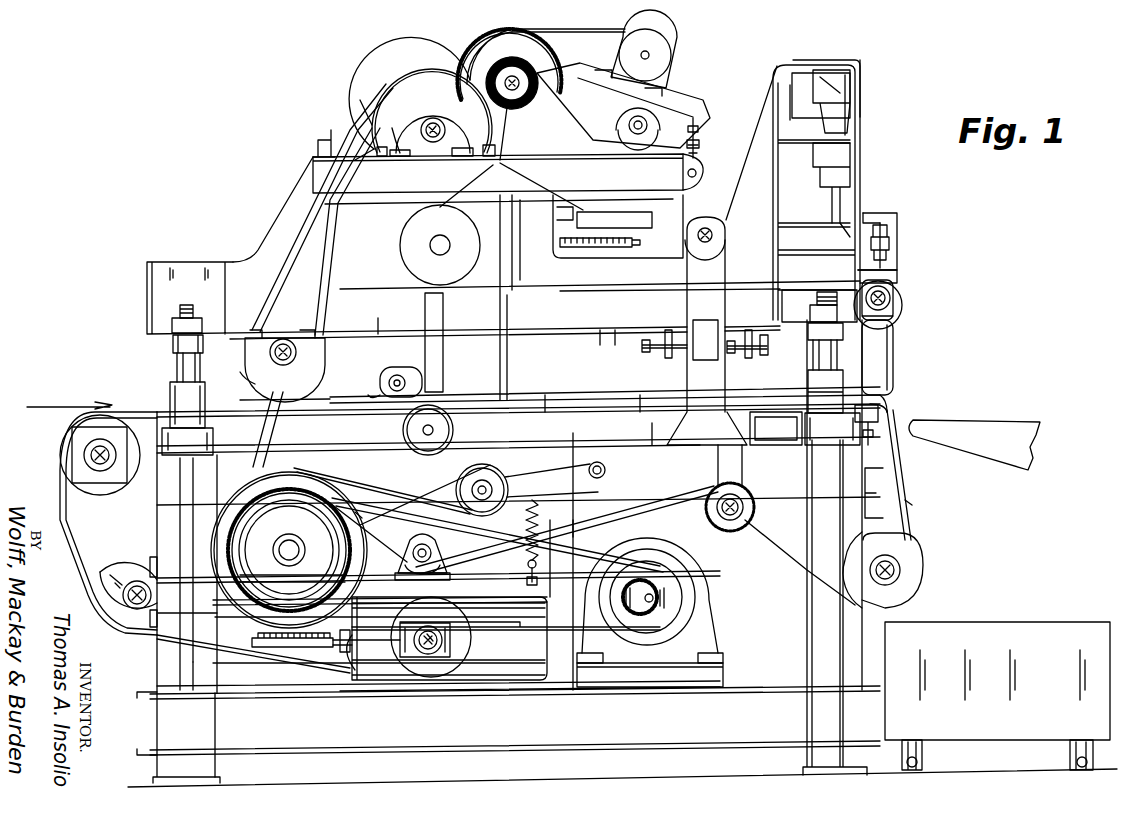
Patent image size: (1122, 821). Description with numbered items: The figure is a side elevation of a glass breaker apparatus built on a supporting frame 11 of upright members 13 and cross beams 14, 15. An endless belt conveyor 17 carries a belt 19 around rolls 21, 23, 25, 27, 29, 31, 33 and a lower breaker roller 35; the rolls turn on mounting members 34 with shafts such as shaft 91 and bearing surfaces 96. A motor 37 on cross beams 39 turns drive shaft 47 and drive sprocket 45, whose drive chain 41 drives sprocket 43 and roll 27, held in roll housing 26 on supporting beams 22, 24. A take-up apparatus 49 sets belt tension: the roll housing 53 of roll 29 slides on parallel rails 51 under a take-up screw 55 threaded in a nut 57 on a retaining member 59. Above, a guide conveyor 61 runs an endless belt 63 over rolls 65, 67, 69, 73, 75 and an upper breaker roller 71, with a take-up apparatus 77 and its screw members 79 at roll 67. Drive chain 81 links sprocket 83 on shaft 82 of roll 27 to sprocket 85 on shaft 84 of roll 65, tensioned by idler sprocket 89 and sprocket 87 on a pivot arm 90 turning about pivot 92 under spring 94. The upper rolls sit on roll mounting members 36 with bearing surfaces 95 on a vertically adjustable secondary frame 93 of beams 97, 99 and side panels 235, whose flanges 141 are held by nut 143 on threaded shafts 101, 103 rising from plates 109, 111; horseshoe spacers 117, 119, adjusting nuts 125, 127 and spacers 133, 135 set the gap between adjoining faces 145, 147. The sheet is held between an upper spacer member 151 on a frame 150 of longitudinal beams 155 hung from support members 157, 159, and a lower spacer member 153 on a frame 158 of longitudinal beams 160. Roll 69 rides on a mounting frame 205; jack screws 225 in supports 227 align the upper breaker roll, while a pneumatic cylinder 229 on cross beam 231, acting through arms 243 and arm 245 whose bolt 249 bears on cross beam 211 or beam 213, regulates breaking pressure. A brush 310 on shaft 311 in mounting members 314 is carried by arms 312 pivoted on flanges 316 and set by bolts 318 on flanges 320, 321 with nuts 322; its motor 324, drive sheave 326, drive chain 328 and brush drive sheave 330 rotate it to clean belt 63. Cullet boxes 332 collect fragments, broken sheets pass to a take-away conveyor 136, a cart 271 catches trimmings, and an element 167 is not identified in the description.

The supporting frame 11 is at (156, 668).
The upright members 13 is at (200, 665).
The cross beams 14 is at (155, 722).
The cross beams 15 is at (330, 745).
The endless belt conveyor 17 is at (910, 508).
The belt 19 is at (73, 518).
The roll 21 is at (910, 556).
The supporting beam 22 is at (218, 605).
The roll 23 is at (745, 520).
The supporting beam 24 is at (575, 538).
The roll 25 is at (430, 538).
The roll housing 26 is at (275, 552).
The roll 27 is at (335, 552).
The roll 29 is at (458, 660).
The roll 31 is at (128, 562).
The roll 33 is at (66, 454).
The mounting members 34 is at (104, 470).
The breaker roller 35 is at (880, 412).
The roll mounting members 36 is at (392, 132).
The motor 37 is at (688, 550).
The cross beams 39 is at (547, 678).
The drive chain 41 is at (448, 516).
The sprocket 43 is at (362, 515).
The drive sprocket 45 is at (650, 604).
The drive shaft 47 is at (643, 593).
The take-up apparatus 49 is at (428, 660).
The parallel rails 51 is at (517, 626).
The roll housing 53 is at (455, 640).
The take-up screw 55 is at (300, 650).
The nut 57 is at (338, 655).
The retaining member 59 is at (345, 690).
The guide conveyor 61 is at (918, 335).
The endless belt 63 is at (365, 388).
The roll 65 is at (418, 82).
The roll 67 is at (462, 265).
The roll 69 is at (895, 297).
The breaker roller 71 is at (893, 383).
The roll 73 is at (391, 379).
The roll 75 is at (312, 370).
The take-up apparatus 77 is at (372, 283).
The screw members 79 is at (600, 250).
The drive chain 81 is at (380, 98).
The shaft 82 is at (287, 542).
The sprocket 83 is at (325, 476).
The shaft 84 is at (428, 115).
The sprocket 85 is at (390, 183).
The sprocket 87 is at (460, 478).
The idler sprocket 89 is at (416, 452).
The pivot arm 90 is at (585, 490).
The shaft 91 is at (125, 580).
The pivot 92 is at (606, 470).
The secondary frame 93 is at (278, 222).
The spring 94 is at (518, 542).
The bearing surfaces 95 is at (436, 120).
The bearing surfaces 96 is at (110, 585).
The beam 97 is at (255, 310).
The beam 99 is at (317, 136).
The threaded shaft 101 is at (190, 305).
The threaded shaft 103 is at (817, 299).
The plate 109 is at (176, 455).
The plate 111 is at (818, 440).
The horseshoe spacer 117 is at (170, 390).
The horseshoe spacer 119 is at (808, 378).
The adjusting nut 125 is at (177, 368).
The adjusting nut 127 is at (813, 355).
The spacer 133 is at (172, 345).
The spacer 135 is at (808, 333).
The take-away conveyor 136 is at (1003, 410).
The flanges 141 is at (378, 317).
The nut 143 is at (172, 322).
The upper adjoining face 145 is at (635, 412).
The lower adjoining face 147 is at (345, 412).
The frame 150 is at (590, 350).
The upper spacer member 151 is at (480, 395).
The lower spacer member 153 is at (553, 412).
The longitudinal beams 155 is at (605, 345).
The support member 157 is at (425, 340).
The frame 158 is at (250, 470).
The support member 159 is at (870, 350).
The longitudinal beams 160 is at (655, 432).
The block 167 is at (776, 427).
The mounting frame 205 is at (895, 316).
The cross beam 211 is at (897, 266).
The beam 213 is at (897, 217).
The jack screws 225 is at (652, 352).
The supports 227 is at (670, 358).
The pneumatic cylinder 229 is at (860, 152).
The cross beam 231 is at (865, 75).
The side panels 235 is at (768, 102).
The arms 243 is at (732, 215).
The arm 245 is at (865, 222).
The bolt 249 is at (890, 236).
The cart 271 is at (1042, 620).
The brush 310 is at (482, 47).
The shaft 311 is at (520, 84).
The supporting arms 312 is at (700, 132).
The mounting members 314 is at (512, 100).
The flanges 316 is at (620, 118).
The bolts 318 is at (698, 156).
The flanges 320 is at (707, 320).
The flanges 321 is at (683, 165).
The nuts 322 is at (700, 146).
The motor 324 is at (680, 25).
The drive sheave 326 is at (671, 55).
The drive chain 328 is at (606, 29).
The brush drive sheave 330 is at (503, 32).
The cullet boxes 332 is at (640, 228).